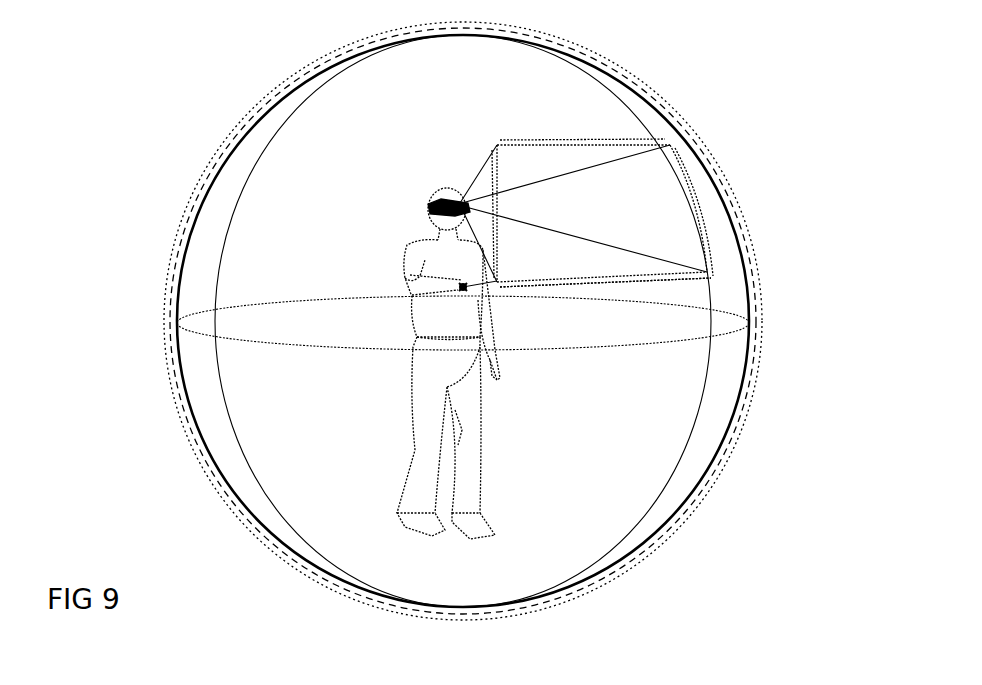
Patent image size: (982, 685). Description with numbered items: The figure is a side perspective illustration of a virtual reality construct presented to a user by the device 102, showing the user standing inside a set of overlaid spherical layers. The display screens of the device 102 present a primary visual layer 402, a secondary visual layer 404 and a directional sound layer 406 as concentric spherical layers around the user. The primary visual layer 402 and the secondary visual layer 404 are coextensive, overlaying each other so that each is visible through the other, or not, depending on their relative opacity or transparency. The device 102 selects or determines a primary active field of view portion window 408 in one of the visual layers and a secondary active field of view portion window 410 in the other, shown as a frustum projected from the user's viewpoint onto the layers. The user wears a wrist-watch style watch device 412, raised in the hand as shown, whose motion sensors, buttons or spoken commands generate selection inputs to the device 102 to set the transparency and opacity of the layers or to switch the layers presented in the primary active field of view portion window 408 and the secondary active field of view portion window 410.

The device 102 is at (432, 208).
The primary visual layer 402 is at (592, 67).
The secondary visual layer 404 is at (675, 118).
The directional sound layer 406 is at (732, 188).
The primary active field of view portion window 408 is at (693, 278).
The secondary active field of view portion window 410 is at (608, 292).
The watch device 412 is at (462, 288).